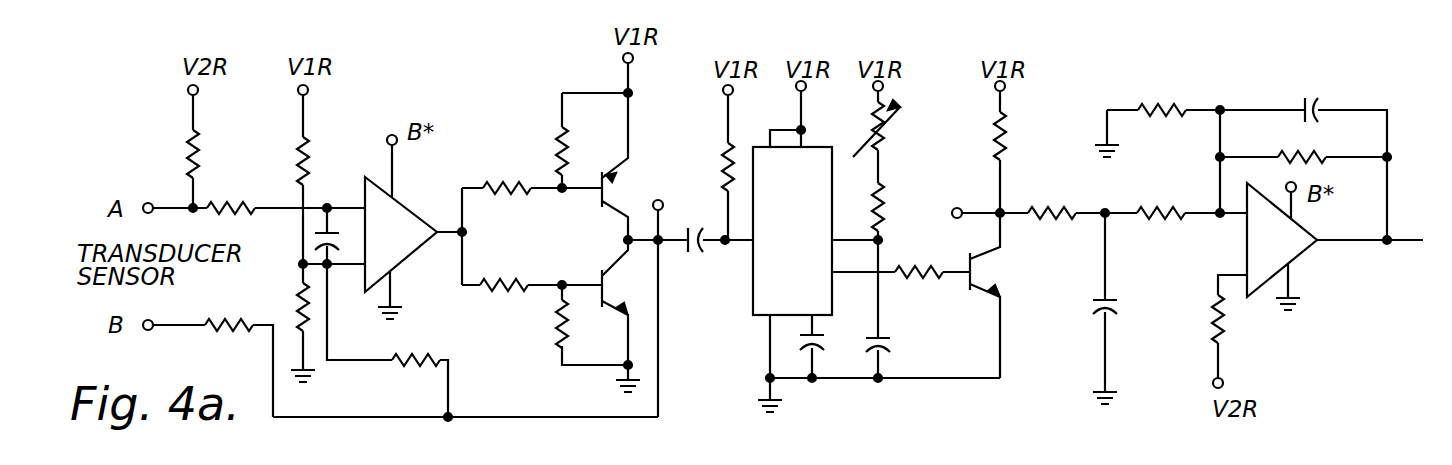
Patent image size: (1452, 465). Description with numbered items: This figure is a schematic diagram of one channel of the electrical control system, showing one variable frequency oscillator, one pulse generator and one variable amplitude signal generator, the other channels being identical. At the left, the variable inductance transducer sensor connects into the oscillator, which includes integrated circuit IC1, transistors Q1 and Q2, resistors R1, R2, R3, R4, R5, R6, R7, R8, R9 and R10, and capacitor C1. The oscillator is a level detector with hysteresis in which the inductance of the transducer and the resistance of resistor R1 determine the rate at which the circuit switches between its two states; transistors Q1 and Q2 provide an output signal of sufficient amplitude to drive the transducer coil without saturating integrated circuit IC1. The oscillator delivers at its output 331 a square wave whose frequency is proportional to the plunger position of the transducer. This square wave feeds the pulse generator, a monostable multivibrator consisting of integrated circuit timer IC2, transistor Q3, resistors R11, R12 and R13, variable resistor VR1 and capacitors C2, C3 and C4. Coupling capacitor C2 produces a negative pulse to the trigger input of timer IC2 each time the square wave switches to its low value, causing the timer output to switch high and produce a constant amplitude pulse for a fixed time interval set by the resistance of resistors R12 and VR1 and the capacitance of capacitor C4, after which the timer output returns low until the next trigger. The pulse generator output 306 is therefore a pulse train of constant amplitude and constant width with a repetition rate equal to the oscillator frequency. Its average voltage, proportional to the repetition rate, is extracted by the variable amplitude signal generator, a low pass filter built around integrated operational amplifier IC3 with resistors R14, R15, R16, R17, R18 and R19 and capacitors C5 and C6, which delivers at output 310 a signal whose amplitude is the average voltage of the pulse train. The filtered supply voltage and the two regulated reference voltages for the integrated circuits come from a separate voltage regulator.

The resistor R1 is at (198, 148).
The resistor R2 is at (231, 196).
The resistor R3 is at (229, 338).
The resistor R4 is at (308, 140).
The resistor R5 is at (292, 301).
The resistor R6 is at (416, 346).
The resistor R7 is at (507, 178).
The resistor R8 is at (504, 274).
The resistor R9 is at (555, 138).
The resistor R10 is at (557, 329).
The resistor R11 is at (724, 155).
The resistor R12 is at (901, 280).
The resistor R13 is at (919, 261).
The resistor R14 is at (1023, 147).
The resistor R15 is at (1053, 201).
The resistor R16 is at (1200, 118).
The resistor R17 is at (1165, 202).
The resistor R18 is at (1298, 152).
The resistor R19 is at (1216, 311).
The variable resistor VR1 is at (893, 132).
The capacitor C1 is at (324, 203).
The coupling capacitor C2 is at (690, 256).
The capacitor C3 is at (830, 348).
The capacitor C4 is at (889, 348).
The capacitor C5 is at (1126, 307).
The capacitor C6 is at (1343, 151).
The transistor Q1 is at (628, 166).
The transistor Q2 is at (626, 302).
The transistor Q3 is at (998, 295).
The integrated circuit IC1 is at (413, 248).
The integrated circuit timer IC2 is at (792, 198).
The integrated operational amplifier IC3 is at (1335, 246).
The oscillator output 331 is at (680, 191).
The pulse generator output 306 is at (970, 205).
The variable amplitude signal generator output 310 is at (1398, 246).